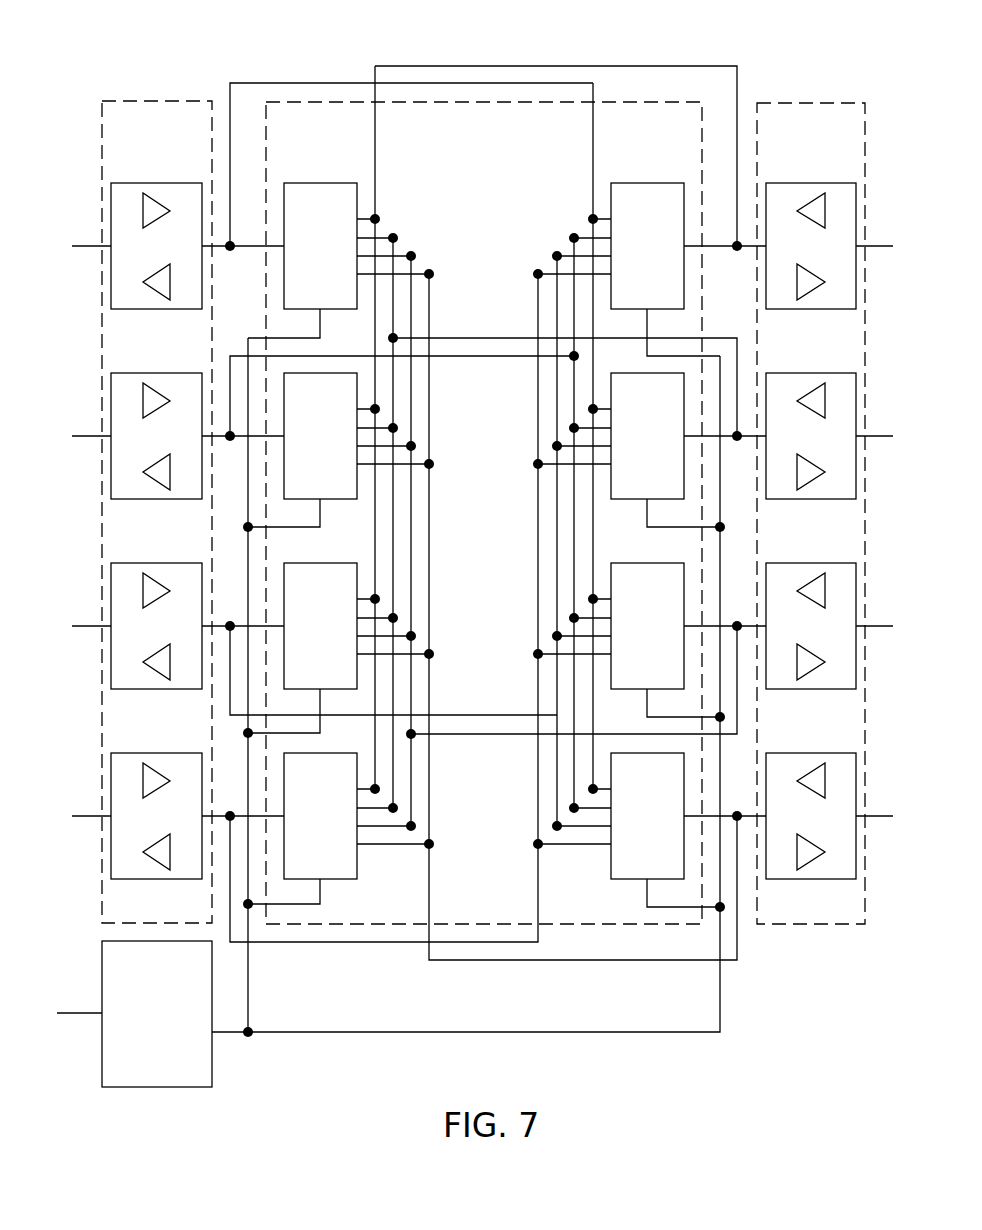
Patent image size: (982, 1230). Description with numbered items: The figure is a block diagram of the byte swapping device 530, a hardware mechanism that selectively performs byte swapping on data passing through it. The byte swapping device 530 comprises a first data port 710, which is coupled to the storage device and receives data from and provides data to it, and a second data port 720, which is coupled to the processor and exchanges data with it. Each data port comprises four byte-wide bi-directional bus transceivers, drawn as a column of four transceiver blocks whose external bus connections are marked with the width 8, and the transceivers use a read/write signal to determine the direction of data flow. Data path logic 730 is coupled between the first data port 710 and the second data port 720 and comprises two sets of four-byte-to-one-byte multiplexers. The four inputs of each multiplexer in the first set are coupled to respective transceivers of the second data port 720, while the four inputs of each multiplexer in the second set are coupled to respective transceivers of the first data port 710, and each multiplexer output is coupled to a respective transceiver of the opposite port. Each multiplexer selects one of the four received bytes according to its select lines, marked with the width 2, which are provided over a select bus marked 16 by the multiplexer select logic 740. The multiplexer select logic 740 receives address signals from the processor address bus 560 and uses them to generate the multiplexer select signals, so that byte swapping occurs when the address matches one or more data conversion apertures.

The byte swapping device 530 is at (455, 33).
The first data port 710 is at (792, 172).
The second data port 720 is at (138, 172).
The data path logic 730 is at (464, 173).
The multiplexer select logic 740 is at (176, 1077).
The processor address bus 560 is at (83, 1014).
The 8-bit data bus 8 is at (883, 808).
The 2-bit mux select lines 2 is at (656, 885).
The 16-bit select bus 16 is at (223, 1040).